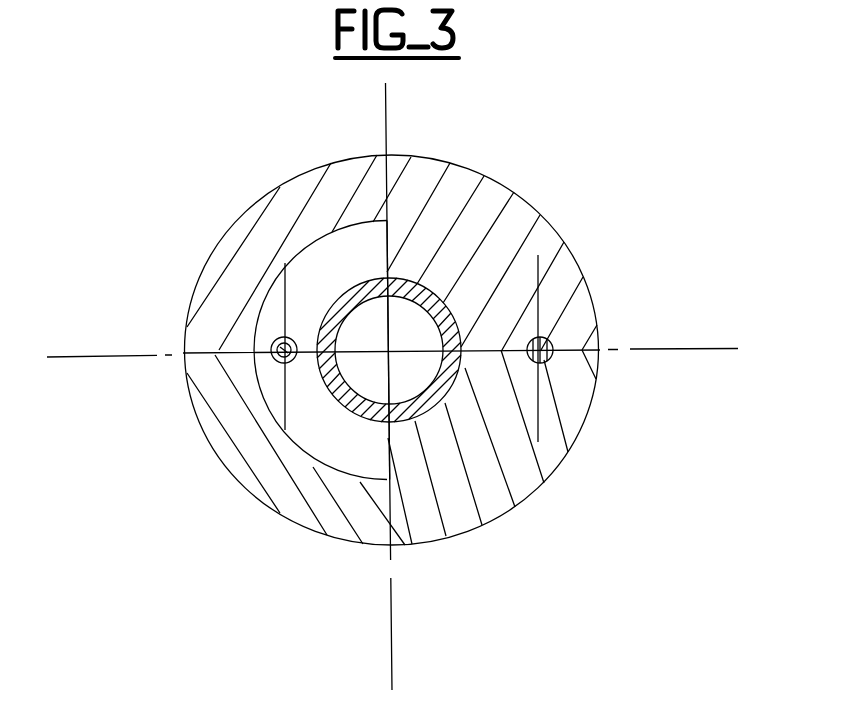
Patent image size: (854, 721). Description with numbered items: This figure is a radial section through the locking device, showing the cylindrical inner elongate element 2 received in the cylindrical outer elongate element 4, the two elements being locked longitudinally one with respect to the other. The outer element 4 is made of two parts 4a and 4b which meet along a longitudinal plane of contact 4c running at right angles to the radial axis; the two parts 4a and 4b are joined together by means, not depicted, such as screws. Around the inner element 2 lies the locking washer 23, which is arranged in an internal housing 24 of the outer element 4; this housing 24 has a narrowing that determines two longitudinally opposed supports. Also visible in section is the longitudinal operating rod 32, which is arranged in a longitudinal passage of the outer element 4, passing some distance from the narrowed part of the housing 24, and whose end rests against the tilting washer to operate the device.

The inner elongate element 2 is at (335, 249).
The outer elongate element 4 is at (233, 480).
The part of the outer element 4a is at (516, 222).
The part of the outer element 4b is at (518, 490).
The longitudinal plane of contact 4c is at (188, 332).
The locking washer 23 is at (340, 447).
The internal housing 24 is at (300, 296).
The longitudinal operating rod 32 is at (553, 340).